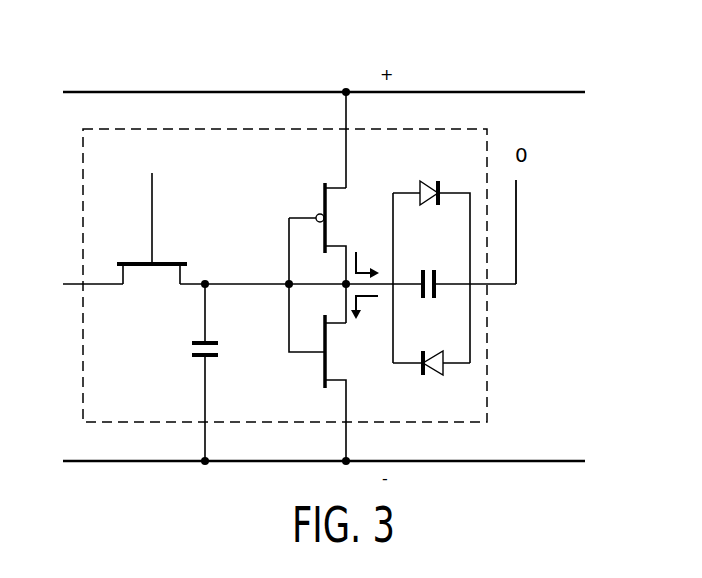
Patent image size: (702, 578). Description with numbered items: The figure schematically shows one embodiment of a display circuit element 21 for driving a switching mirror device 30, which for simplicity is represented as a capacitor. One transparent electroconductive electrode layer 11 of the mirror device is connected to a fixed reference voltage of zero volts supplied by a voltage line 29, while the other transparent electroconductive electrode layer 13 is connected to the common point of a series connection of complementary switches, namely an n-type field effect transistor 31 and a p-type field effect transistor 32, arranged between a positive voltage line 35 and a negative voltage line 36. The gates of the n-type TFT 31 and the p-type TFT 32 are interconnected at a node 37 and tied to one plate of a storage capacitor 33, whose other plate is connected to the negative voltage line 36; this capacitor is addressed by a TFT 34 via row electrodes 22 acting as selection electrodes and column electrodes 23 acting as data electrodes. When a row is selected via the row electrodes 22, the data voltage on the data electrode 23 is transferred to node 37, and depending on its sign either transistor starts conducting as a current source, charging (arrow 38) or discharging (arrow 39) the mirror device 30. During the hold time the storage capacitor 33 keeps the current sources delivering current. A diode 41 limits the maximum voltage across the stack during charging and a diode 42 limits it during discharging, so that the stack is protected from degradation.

The transparent electroconductive electrode layer 11 is at (435, 300).
The transparent electroconductive electrode layer 13 is at (422, 272).
The display circuit element 21 is at (490, 131).
The row electrodes 22 is at (152, 198).
The column electrodes 23 is at (100, 283).
The voltage line 29 is at (516, 240).
The switching mirror device 30 is at (446, 280).
The n-type field effect transistor 31 is at (323, 370).
The p-type field effect transistor 32 is at (322, 198).
The storage capacitor 33 is at (212, 357).
The TFT 34 is at (140, 265).
The positive voltage line 35 is at (350, 90).
The negative voltage line 36 is at (552, 461).
The node 37 is at (205, 281).
The arrow 38 is at (362, 262).
The arrow 39 is at (372, 300).
The diode 41 is at (427, 186).
The diode 42 is at (437, 378).